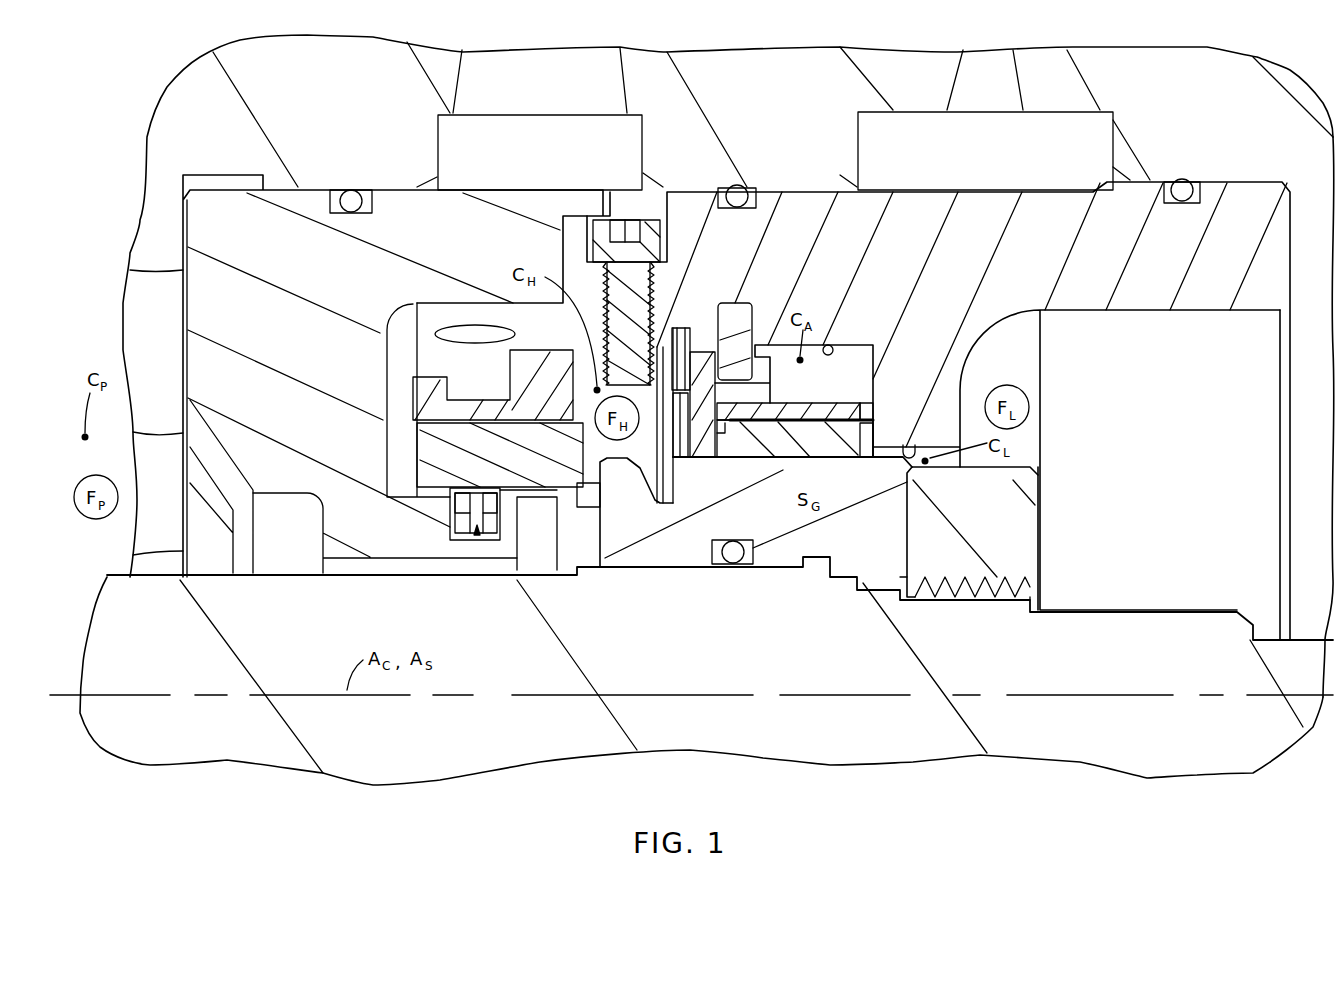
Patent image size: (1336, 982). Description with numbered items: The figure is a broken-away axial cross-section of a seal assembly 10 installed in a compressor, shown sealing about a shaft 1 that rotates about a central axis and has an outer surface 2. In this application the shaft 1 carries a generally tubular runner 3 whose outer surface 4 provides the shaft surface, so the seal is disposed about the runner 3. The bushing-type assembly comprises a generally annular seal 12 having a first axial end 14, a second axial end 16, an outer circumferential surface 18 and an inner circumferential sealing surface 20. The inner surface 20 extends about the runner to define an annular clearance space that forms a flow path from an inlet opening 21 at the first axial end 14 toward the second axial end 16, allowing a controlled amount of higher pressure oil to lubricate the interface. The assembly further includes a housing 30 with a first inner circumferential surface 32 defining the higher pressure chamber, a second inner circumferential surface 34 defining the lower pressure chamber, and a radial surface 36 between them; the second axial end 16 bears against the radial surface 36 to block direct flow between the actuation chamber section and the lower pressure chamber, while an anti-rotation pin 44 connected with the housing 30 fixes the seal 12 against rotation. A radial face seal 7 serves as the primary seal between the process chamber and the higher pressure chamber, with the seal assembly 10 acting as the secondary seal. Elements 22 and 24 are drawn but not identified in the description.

The shaft 1 is at (130, 610).
The outer surface 2 is at (758, 448).
The runner 3 is at (900, 524).
The outer surface 4 is at (831, 425).
The radial face seal 7 is at (618, 502).
The seal assembly 10 is at (787, 375).
The seal 12 is at (845, 386).
The first axial end 14 is at (720, 443).
The second axial end 16 is at (873, 433).
The outer circumferential surface 18 is at (826, 400).
The inner circumferential sealing surface 20 is at (770, 462).
The inlet opening 21 is at (710, 462).
The sleeve seat 22 is at (853, 459).
The seal face 24 is at (795, 405).
The housing 30 is at (787, 197).
The first inner circumferential surface 32 is at (828, 345).
The second inner circumferential surface 34 is at (909, 446).
The radial surface 36 is at (868, 402).
The anti-rotation pin 44 is at (733, 317).